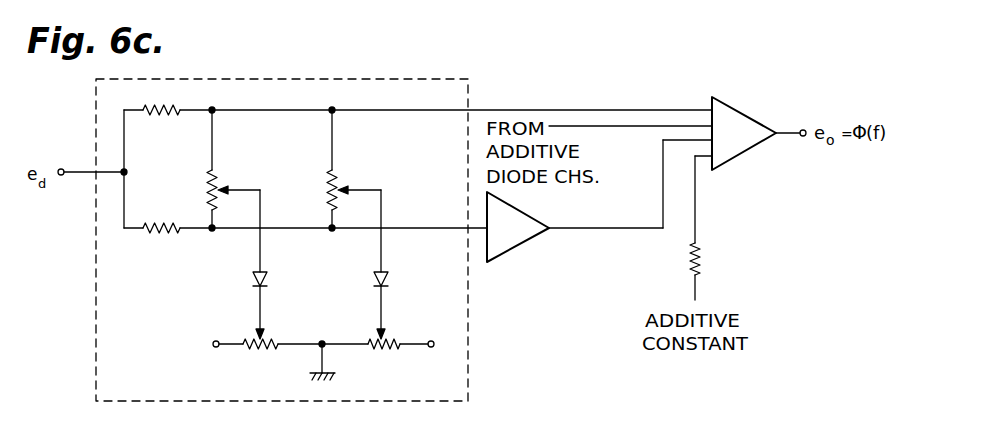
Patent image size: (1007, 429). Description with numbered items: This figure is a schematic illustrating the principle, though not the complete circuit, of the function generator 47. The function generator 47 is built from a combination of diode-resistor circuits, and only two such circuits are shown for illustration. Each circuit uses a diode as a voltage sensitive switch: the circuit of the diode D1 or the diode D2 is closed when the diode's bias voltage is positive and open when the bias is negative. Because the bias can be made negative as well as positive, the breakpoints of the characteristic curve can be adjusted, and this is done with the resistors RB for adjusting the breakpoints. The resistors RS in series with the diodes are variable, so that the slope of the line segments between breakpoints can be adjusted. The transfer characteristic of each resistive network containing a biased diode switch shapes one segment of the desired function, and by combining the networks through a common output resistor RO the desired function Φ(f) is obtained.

The function generator 47 is at (408, 76).
The slope adjusting resistors RS is at (278, 169).
The breakpoint adjusting resistors RB is at (321, 357).
The diode D1 is at (273, 283).
The diode D2 is at (395, 283).
The common output resistor RO is at (708, 259).